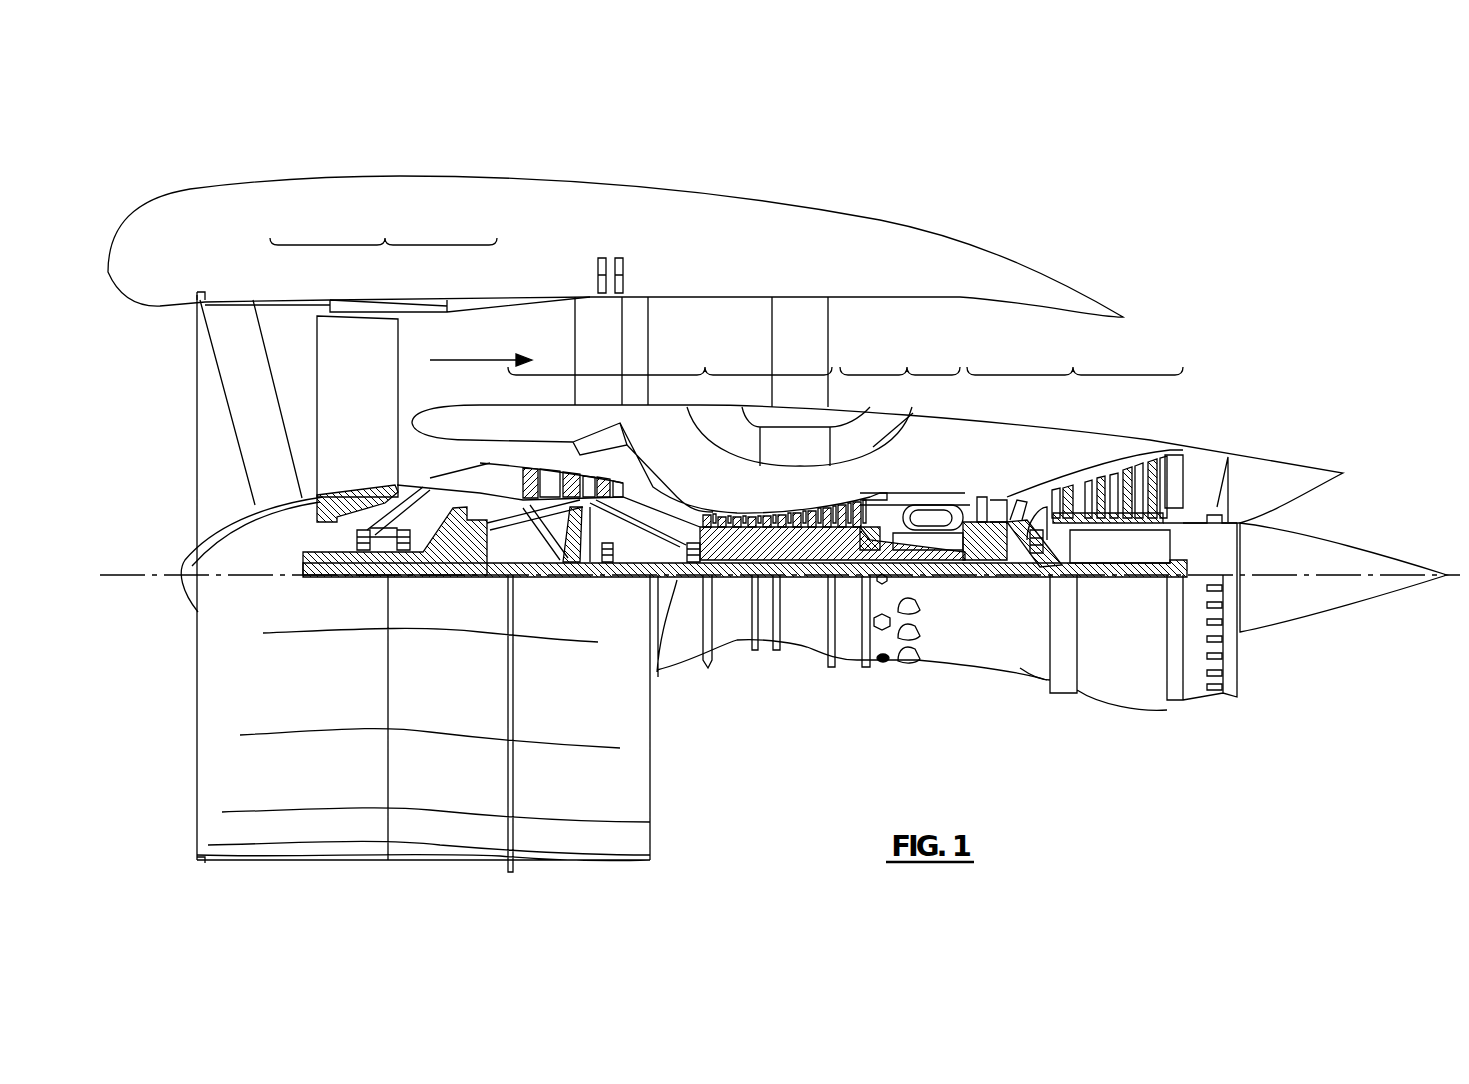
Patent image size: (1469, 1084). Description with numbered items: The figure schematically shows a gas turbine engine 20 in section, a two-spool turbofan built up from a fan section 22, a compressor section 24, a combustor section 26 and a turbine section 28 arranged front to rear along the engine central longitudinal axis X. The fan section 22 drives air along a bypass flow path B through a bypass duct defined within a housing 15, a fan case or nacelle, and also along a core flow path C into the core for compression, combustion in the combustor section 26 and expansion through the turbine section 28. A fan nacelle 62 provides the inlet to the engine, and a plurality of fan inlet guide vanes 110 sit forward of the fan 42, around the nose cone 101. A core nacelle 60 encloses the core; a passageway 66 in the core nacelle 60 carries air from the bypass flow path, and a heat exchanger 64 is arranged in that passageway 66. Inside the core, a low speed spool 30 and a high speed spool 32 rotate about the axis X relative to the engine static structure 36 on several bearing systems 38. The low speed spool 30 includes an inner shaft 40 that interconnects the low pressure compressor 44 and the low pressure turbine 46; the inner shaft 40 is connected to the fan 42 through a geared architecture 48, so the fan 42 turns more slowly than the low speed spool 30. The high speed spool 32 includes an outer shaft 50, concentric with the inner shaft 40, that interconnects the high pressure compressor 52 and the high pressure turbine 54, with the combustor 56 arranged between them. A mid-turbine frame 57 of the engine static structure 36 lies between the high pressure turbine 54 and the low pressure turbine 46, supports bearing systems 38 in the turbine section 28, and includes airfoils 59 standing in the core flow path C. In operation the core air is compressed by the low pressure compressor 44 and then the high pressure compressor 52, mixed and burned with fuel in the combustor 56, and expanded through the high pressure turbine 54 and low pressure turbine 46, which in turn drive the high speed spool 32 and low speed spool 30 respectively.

The gas turbine engine 20 is at (1158, 352).
The fan section 22 is at (383, 222).
The compressor section 24 is at (670, 352).
The combustor section 26 is at (900, 352).
The turbine section 28 is at (1075, 352).
The housing 15 is at (463, 308).
The fan nacelle 62 is at (496, 178).
The core nacelle 60 is at (1180, 438).
The heat exchanger 64 is at (810, 442).
The passageway 66 is at (873, 447).
The fan inlet guide vanes 110 is at (240, 398).
The nose cone 101 is at (198, 562).
The fan 42 is at (357, 406).
The low pressure compressor 44 is at (583, 477).
The high pressure compressor 52 is at (783, 545).
The high speed spool 32 is at (850, 505).
The combustor 56 is at (920, 518).
The high pressure turbine 54 is at (980, 500).
The mid-turbine frame 57 is at (1033, 486).
The low pressure turbine 46 is at (1114, 462).
The bearing systems 38 is at (367, 577).
The geared architecture 48 is at (475, 560).
The outer shaft 50 is at (924, 575).
The airfoils 59 is at (1038, 523).
The low speed spool 30 is at (806, 578).
The engine static structure 36 is at (847, 662).
The inner shaft 40 is at (673, 582).
The engine central longitudinal axis X is at (1318, 575).
The bypass flow path B is at (468, 360).
The core flow path C is at (475, 476).